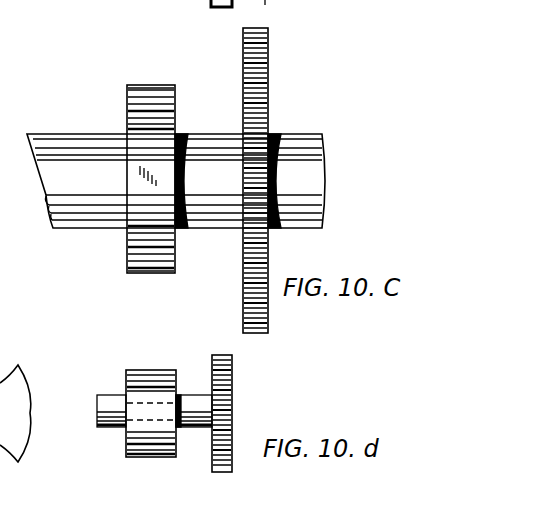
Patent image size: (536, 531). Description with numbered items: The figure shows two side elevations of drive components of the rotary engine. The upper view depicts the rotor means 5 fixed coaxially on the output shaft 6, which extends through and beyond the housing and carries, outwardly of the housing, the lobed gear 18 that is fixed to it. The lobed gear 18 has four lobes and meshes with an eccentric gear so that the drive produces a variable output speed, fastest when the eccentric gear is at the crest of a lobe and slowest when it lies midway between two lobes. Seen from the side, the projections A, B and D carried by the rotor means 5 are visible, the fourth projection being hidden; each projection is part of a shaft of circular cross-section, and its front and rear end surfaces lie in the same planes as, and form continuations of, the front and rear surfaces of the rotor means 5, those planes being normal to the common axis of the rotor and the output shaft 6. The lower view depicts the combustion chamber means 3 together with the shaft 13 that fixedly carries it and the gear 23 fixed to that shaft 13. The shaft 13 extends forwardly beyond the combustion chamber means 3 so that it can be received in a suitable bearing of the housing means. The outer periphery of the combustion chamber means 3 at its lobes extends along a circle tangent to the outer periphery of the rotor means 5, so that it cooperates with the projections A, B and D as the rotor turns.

In FIG. 10c, the output shaft 6 is at (83, 168).
In FIG. 10c, the rotor means 5 is at (137, 184).
In FIG. 10c, the lobed gear 18 is at (262, 75).
In FIG. 10d, the combustion chamber means 3 is at (140, 385).
In FIG. 10d, the shaft 13 is at (108, 402).
In FIG. 10d, the gear 23 is at (222, 398).
In FIG. 10c, the projection A is at (160, 174).
In FIG. 10c, the projection B is at (148, 97).
In FIG. 10c, the projection D is at (145, 273).